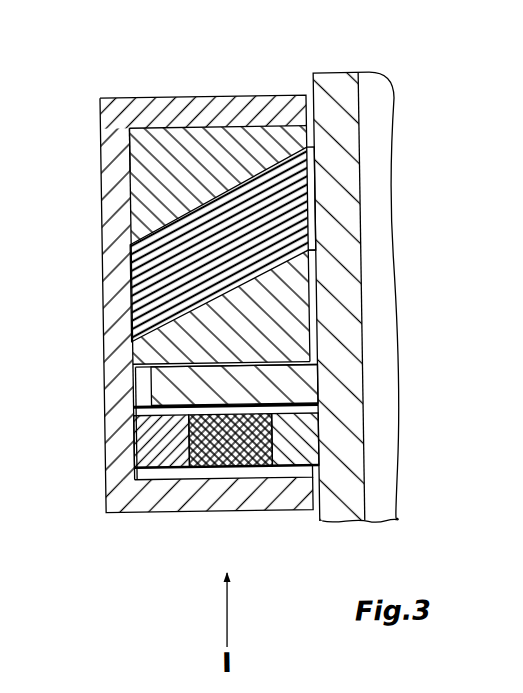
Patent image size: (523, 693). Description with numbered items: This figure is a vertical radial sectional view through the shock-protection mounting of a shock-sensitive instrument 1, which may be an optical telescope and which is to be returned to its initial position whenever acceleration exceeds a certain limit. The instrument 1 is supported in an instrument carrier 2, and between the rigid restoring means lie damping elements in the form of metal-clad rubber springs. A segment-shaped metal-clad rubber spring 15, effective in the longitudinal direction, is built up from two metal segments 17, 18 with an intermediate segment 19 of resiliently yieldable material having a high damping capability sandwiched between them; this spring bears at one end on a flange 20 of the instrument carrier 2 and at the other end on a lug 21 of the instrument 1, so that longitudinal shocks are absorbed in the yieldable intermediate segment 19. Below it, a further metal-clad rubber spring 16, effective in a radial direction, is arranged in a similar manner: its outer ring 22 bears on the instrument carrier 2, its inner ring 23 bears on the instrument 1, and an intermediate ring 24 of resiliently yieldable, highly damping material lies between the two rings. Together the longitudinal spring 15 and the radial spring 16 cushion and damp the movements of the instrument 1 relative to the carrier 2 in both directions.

The instrument 1 is at (363, 245).
The carrier 2 is at (101, 217).
The metal-clad rubber springs 15 is at (130, 161).
The metal-clad rubber springs 16 is at (128, 439).
The metal segment 17 is at (217, 138).
The metal segment 18 is at (282, 312).
The intermediate segment 19 is at (291, 213).
The flange 20 is at (161, 106).
The lug 21 is at (257, 382).
The outer ring 22 is at (151, 451).
The inner ring 23 is at (310, 438).
The intermediate ring 24 is at (227, 457).